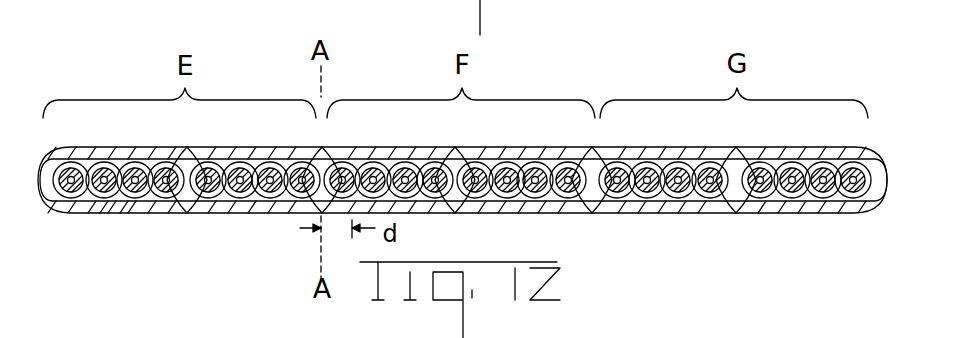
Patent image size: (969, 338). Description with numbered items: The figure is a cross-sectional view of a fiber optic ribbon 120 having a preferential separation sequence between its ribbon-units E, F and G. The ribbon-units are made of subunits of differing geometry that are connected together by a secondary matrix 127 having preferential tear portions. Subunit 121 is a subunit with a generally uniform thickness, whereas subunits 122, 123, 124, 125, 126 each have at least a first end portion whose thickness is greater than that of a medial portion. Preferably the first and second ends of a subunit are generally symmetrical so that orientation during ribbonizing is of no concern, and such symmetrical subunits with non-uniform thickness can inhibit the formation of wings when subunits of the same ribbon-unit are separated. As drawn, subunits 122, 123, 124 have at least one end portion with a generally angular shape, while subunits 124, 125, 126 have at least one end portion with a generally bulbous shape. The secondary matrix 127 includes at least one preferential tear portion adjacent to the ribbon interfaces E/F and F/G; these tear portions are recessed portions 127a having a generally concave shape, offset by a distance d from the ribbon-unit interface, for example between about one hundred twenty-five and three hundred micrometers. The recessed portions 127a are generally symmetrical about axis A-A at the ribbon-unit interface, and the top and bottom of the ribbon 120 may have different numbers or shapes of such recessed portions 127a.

The ribbon 120 is at (140, 84).
The subunit 121 is at (117, 203).
The subunit 122 is at (267, 197).
The subunit 123 is at (415, 205).
The subunit 124 is at (533, 208).
The subunit 125 is at (716, 212).
The subunit 126 is at (826, 212).
The secondary matrix 127 is at (42, 172).
The recessed portions 127a is at (290, 145).